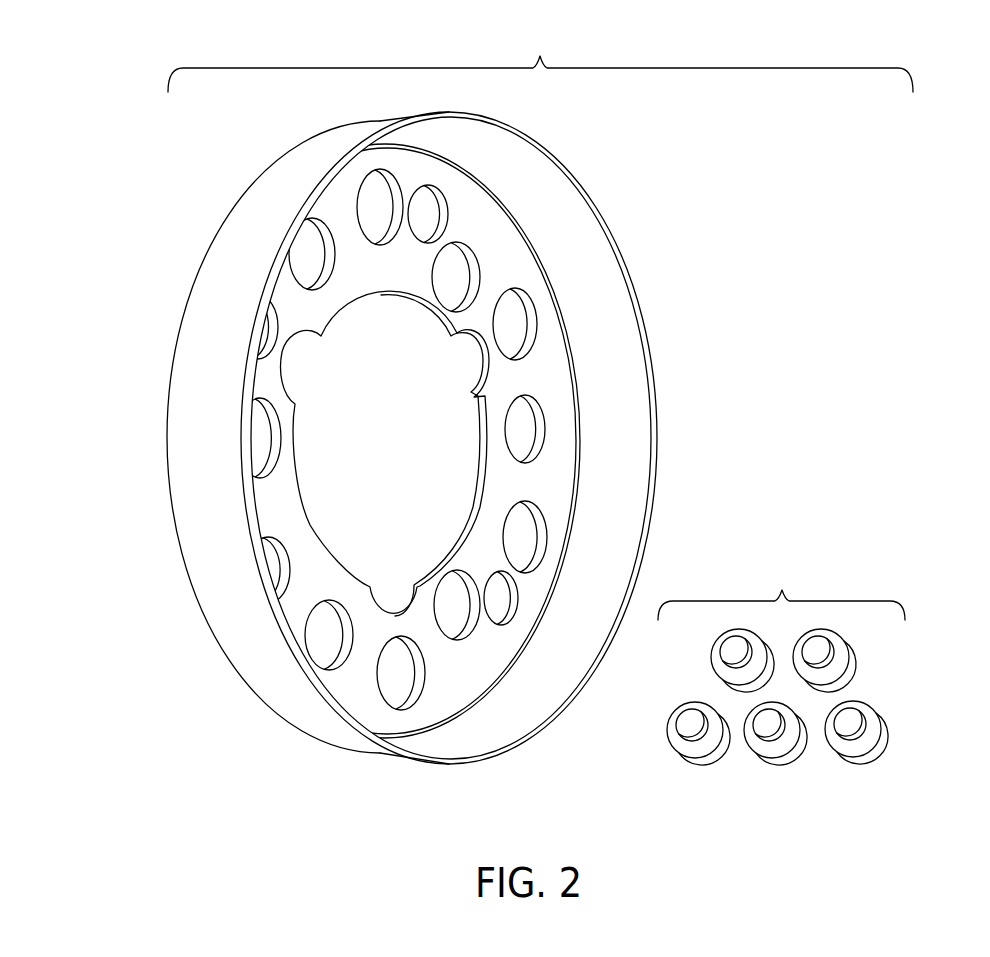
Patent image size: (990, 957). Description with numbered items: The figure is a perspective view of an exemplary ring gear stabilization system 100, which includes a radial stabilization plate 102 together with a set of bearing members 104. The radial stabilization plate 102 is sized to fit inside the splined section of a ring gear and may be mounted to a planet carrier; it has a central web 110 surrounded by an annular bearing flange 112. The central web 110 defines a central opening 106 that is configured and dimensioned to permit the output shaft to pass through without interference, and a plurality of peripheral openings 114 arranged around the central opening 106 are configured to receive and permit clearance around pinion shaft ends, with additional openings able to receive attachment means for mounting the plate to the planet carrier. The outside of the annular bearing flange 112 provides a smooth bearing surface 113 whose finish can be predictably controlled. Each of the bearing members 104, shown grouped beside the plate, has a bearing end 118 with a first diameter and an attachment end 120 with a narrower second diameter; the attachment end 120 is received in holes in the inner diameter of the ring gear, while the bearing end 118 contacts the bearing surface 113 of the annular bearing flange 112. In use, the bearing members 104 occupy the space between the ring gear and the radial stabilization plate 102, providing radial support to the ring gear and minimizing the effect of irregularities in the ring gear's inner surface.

The ring gear stabilization system 100 is at (540, 60).
The radial stabilization plate 102 is at (438, 482).
The bearing members 104 is at (781, 663).
The central opening 106 is at (355, 497).
The central web 110 is at (553, 451).
The annular bearing flange 112 is at (573, 242).
The bearing surface 113 is at (193, 372).
The peripheral openings 114 is at (462, 640).
The bearing end 118 is at (870, 746).
The attachment end 120 is at (852, 720).